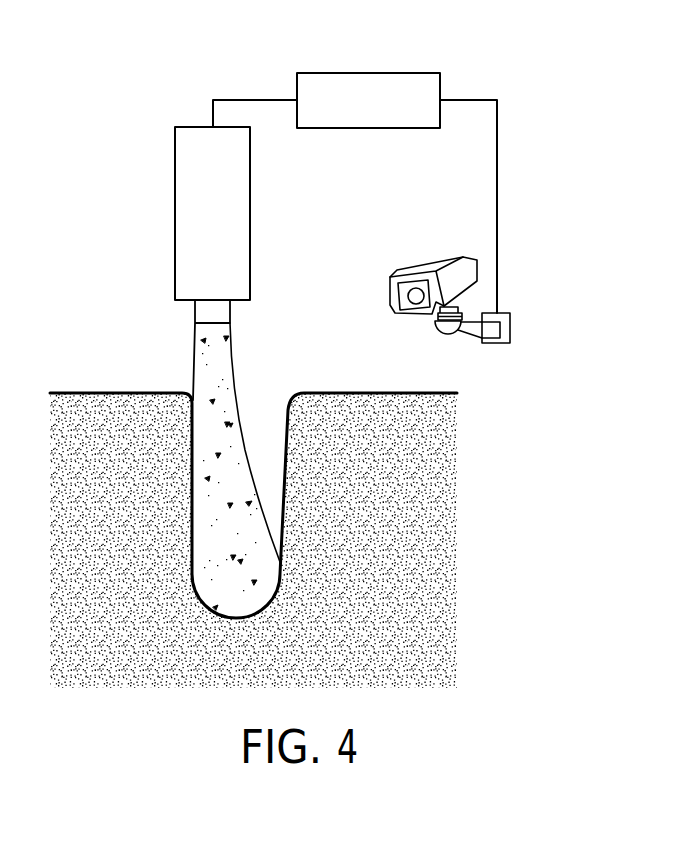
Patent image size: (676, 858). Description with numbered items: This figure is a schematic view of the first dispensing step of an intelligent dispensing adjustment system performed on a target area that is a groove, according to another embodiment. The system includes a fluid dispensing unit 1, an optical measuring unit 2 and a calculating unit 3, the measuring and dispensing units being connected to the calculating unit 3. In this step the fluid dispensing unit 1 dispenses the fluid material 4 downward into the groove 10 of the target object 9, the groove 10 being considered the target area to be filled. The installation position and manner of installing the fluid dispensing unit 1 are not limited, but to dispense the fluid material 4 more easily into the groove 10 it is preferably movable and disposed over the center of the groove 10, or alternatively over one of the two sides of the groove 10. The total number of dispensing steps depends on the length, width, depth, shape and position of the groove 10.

The fluid dispensing unit 1 is at (197, 168).
The optical measuring unit 2 is at (432, 272).
The calculating unit 3 is at (372, 88).
The fluid material 4 is at (199, 360).
The target object 9 is at (397, 474).
The groove 10 is at (263, 432).